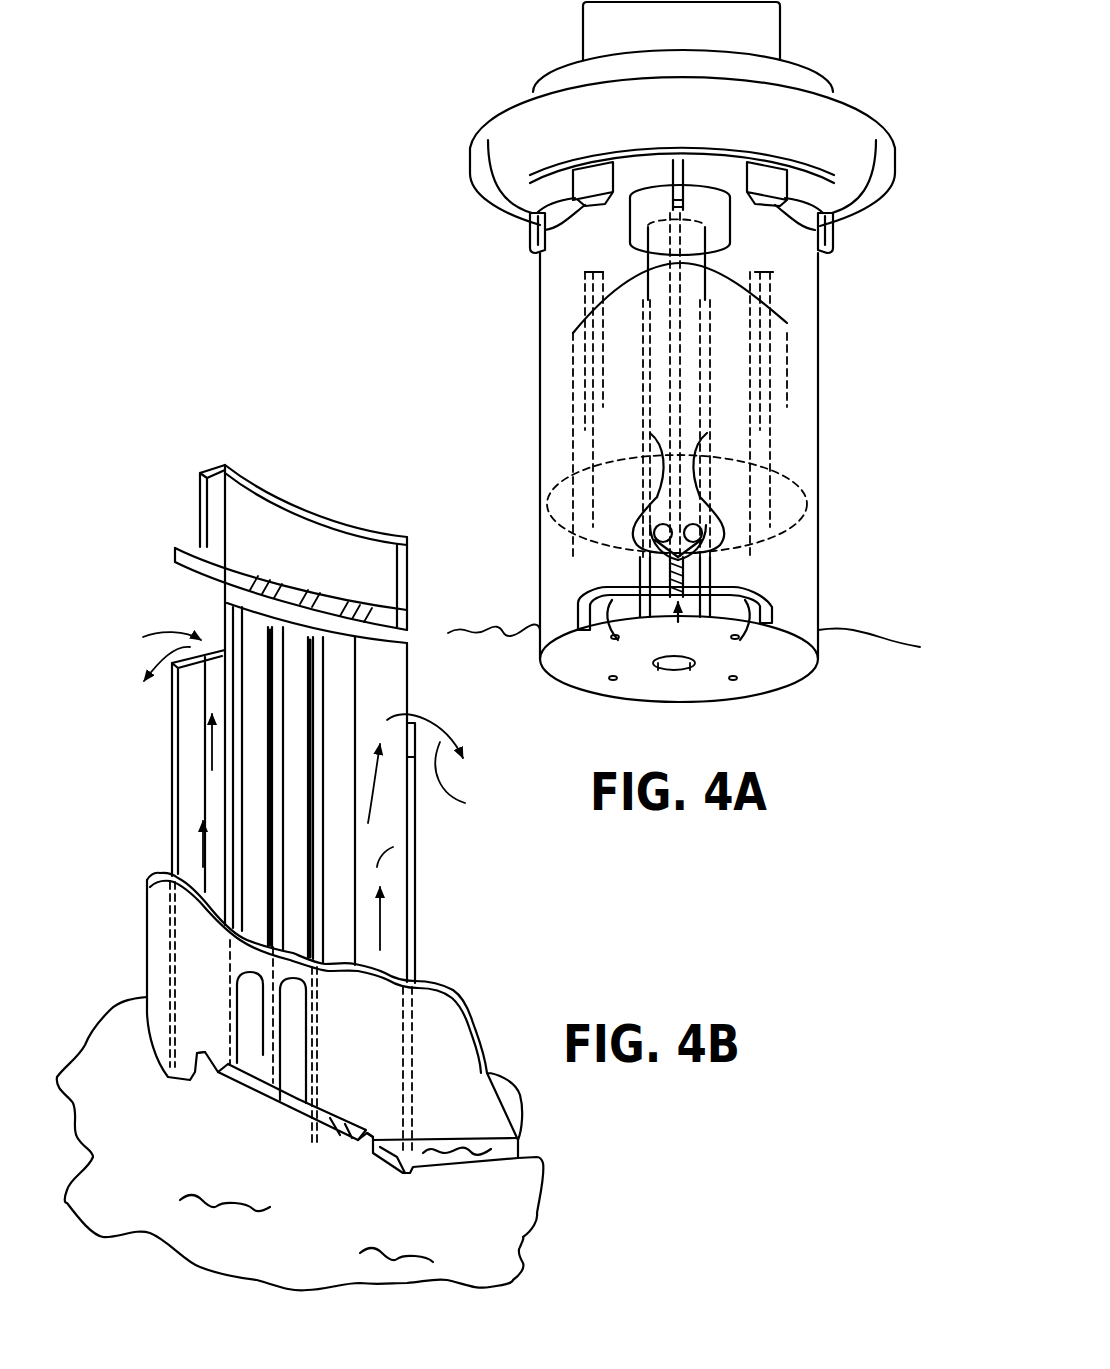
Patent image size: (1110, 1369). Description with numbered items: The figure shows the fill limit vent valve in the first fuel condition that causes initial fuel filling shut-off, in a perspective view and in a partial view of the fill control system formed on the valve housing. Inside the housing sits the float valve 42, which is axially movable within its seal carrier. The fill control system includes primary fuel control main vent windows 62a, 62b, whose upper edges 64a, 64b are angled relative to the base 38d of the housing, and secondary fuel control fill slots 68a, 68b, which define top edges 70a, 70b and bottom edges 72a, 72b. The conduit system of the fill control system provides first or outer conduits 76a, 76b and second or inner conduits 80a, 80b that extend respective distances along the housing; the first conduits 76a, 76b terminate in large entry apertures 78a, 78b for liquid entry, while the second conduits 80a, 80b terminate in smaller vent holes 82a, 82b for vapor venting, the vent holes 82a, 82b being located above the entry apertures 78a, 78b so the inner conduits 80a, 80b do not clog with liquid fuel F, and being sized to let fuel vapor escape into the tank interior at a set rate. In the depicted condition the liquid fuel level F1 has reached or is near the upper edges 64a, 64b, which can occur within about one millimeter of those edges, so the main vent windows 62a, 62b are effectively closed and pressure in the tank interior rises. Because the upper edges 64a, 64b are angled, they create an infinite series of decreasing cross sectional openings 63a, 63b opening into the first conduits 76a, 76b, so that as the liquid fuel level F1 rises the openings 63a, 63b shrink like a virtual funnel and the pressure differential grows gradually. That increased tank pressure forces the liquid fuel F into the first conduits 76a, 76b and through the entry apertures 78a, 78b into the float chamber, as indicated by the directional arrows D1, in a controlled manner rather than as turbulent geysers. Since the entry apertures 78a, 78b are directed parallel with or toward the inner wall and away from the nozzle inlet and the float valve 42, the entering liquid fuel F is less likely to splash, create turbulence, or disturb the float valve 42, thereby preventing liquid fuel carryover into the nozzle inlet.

In FIG. 4A, the float valve 42 is at (563, 382).
In FIG. 4A, the base 38d is at (695, 695).
In FIG. 4A, the main vent window 62a is at (725, 610).
In FIG. 4B, the main vent window 62a is at (373, 1160).
In FIG. 4A, the main vent window 62b is at (620, 605).
In FIG. 4B, the main vent window 62b is at (205, 1083).
In FIG. 4A, the cross sectional opening 63a is at (705, 585).
In FIG. 4B, the cross sectional opening 63a is at (350, 1132).
In FIG. 4A, the cross sectional opening 63b is at (648, 570).
In FIG. 4B, the cross sectional opening 63b is at (205, 1090).
In FIG. 4A, the upper edge 64a is at (745, 597).
In FIG. 4A, the upper edge 64b is at (597, 597).
In FIG. 4A, the fill slot 68a is at (715, 492).
In FIG. 4B, the fill slot 68a is at (293, 1002).
In FIG. 4A, the fill slot 68b is at (647, 492).
In FIG. 4B, the fill slot 68b is at (236, 968).
In FIG. 4A, the top edge 70a is at (707, 452).
In FIG. 4A, the top edge 70b is at (660, 452).
In FIG. 4A, the bottom edge 72a is at (718, 630).
In FIG. 4A, the bottom edge 72b is at (804, 225).
In FIG. 4B, the first conduit 76a is at (413, 867).
In FIG. 4B, the first conduit 76b is at (207, 783).
In FIG. 4B, the entry aperture 78a is at (410, 704).
In FIG. 4B, the entry aperture 78b is at (144, 637).
In FIG. 4B, the second conduit 80a is at (313, 680).
In FIG. 4B, the second conduit 80b is at (260, 637).
In FIG. 4B, the vent hole 82a is at (332, 597).
In FIG. 4B, the vent hole 82b is at (186, 571).
In FIG. 4A, the liquid fuel F is at (525, 667).
In FIG. 4B, the liquid fuel F is at (161, 1192).
In FIG. 4B, the liquid fuel level F1 is at (460, 626).
In FIG. 4B, the directional arrows D1 is at (293, 739).